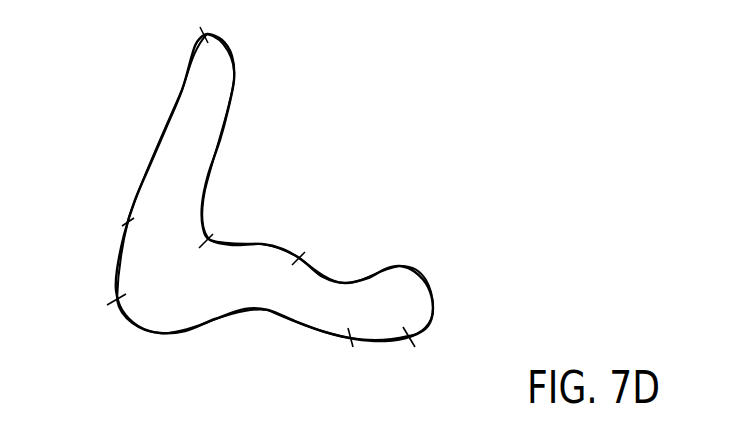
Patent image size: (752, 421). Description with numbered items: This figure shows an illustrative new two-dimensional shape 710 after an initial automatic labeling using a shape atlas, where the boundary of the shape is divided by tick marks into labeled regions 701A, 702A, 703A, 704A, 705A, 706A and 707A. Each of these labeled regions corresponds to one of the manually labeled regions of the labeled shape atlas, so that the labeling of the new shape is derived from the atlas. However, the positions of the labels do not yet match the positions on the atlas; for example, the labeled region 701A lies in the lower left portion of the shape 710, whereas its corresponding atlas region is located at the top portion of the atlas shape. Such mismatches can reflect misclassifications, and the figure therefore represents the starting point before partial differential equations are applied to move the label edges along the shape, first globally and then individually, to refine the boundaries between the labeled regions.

The new 2D shape 710 is at (286, 63).
The labeled region 701A is at (118, 262).
The labeled region 702A is at (160, 128).
The labeled region 703A is at (233, 126).
The labeled region 704A is at (271, 245).
The labeled region 705A is at (368, 277).
The labeled region 706A is at (385, 343).
The labeled region 707A is at (216, 319).